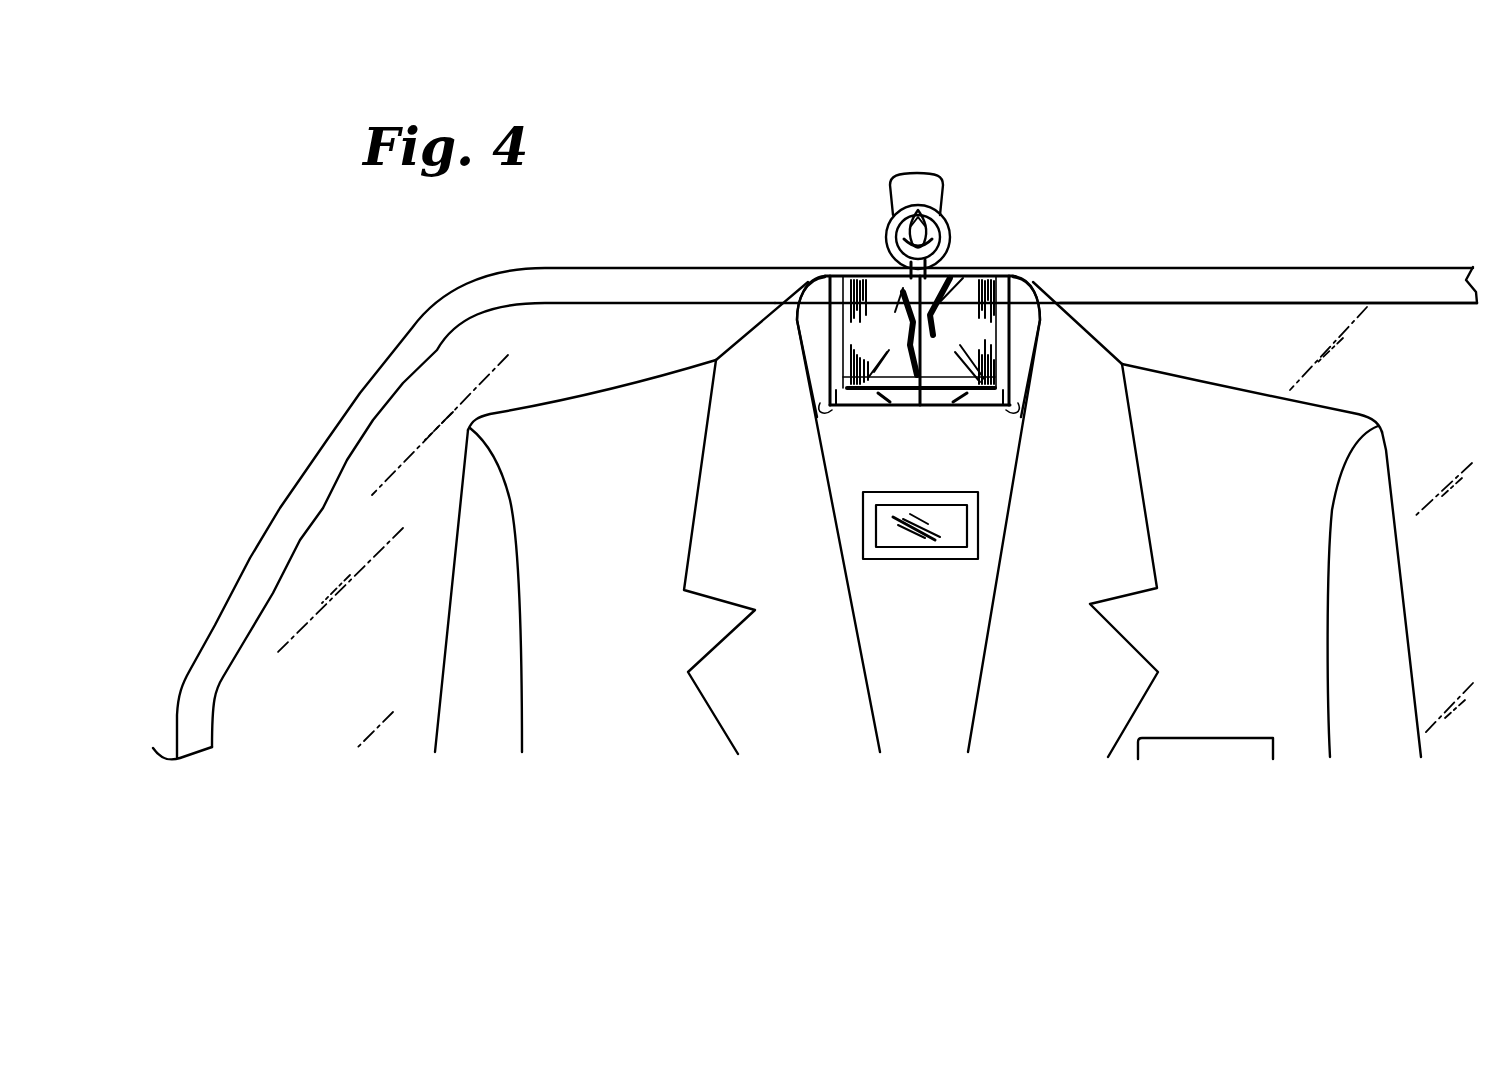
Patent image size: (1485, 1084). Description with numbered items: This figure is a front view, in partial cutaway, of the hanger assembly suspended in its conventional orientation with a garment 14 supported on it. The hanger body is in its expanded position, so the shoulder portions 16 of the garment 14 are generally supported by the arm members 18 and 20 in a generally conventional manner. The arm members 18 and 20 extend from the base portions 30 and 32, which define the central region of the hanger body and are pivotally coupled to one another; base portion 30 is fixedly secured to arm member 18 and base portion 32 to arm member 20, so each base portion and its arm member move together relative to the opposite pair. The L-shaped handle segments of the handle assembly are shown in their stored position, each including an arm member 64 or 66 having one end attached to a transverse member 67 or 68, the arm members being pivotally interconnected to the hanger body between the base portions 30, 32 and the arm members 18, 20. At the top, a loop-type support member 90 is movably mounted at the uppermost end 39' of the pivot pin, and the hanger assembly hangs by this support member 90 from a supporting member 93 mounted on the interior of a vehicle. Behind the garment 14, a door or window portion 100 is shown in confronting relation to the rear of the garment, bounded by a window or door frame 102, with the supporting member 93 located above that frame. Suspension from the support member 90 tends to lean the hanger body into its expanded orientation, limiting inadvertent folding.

The garment 14 is at (553, 622).
The shoulder portions 16 is at (572, 409).
The arm member 18 is at (1027, 342).
The arm member 20 is at (812, 340).
The base portion 30 is at (958, 308).
The base portion 32 is at (873, 307).
The uppermost end of the pivot pin 39' is at (962, 231).
The arm member 64 is at (1007, 383).
The arm member 66 is at (838, 385).
The transverse member 67 is at (967, 393).
The transverse member 68 is at (880, 393).
The support member 90 is at (890, 235).
The supporting member 93 is at (923, 205).
The door or window portion 100 is at (337, 578).
The window or door frame 102 is at (340, 453).